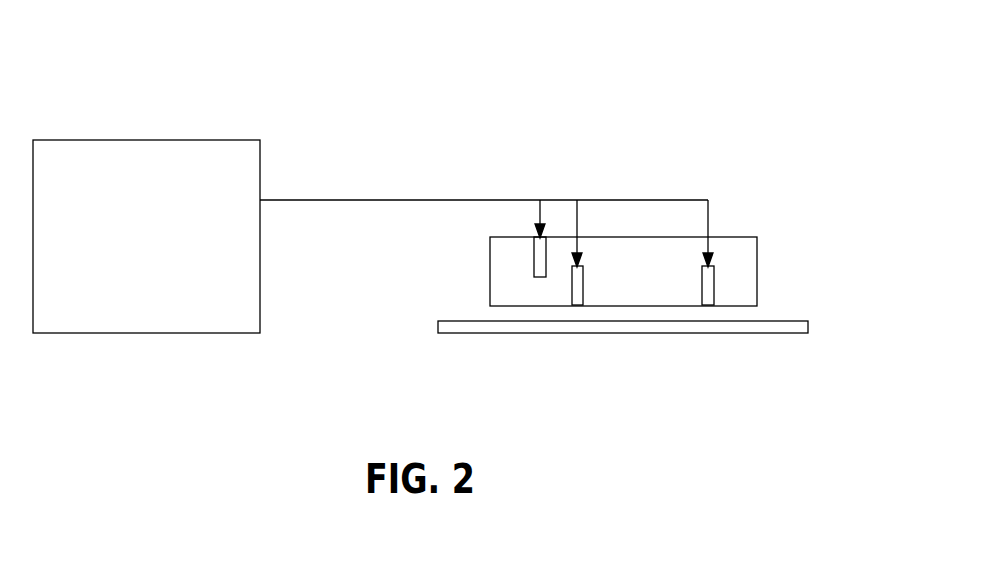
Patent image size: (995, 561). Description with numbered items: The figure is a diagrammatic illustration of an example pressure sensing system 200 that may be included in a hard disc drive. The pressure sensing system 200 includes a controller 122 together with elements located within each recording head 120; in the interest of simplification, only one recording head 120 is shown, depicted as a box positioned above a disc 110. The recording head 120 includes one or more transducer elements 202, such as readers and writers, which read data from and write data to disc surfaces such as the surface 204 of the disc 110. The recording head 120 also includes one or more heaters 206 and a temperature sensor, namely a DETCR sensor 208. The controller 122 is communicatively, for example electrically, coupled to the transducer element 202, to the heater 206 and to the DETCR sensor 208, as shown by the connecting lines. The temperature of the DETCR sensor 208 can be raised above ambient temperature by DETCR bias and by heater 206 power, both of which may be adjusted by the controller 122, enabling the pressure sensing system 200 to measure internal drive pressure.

The pressure sensing system 200 is at (760, 98).
The controller 122 is at (169, 261).
The recording head 120 is at (747, 258).
The disc surface 204 is at (796, 321).
The disc 110 is at (808, 333).
The heater 206 is at (533, 258).
The transducer element 202 is at (571, 287).
The DETCR sensor 208 is at (702, 285).